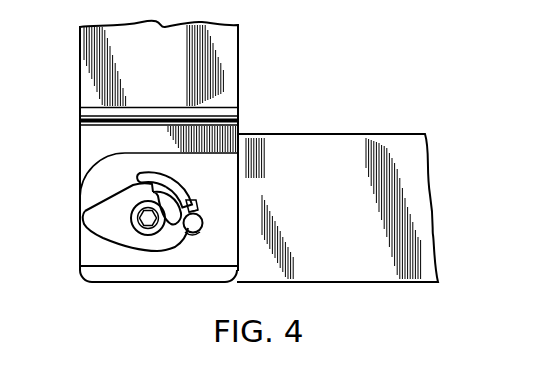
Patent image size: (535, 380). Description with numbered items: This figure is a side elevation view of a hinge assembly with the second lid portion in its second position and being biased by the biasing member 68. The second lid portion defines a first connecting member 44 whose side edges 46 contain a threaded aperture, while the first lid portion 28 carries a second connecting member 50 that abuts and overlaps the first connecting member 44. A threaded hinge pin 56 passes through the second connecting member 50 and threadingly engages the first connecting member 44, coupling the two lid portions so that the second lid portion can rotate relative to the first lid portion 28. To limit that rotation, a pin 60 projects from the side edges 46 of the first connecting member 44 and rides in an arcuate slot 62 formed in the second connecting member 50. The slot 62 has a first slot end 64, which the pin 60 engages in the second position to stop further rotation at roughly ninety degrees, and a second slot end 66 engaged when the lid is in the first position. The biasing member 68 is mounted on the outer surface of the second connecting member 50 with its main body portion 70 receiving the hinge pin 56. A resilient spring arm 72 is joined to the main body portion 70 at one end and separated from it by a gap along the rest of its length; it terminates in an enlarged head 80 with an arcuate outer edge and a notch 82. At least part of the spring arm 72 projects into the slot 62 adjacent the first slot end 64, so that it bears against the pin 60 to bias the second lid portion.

The first lid portion 28 is at (343, 132).
The first connecting member 44 is at (82, 131).
The side edges 46 is at (87, 159).
The second connecting members 50 is at (212, 272).
The threaded hinge pin 56 is at (155, 234).
The pin 60 is at (202, 221).
The arcuate slot 62 is at (177, 181).
The first slot end 64 is at (195, 235).
The second slot end 66 is at (141, 174).
The biasing member 68 is at (99, 255).
The main body portion 70 is at (99, 204).
The resilient spring arm 72 is at (193, 204).
The enlarged head 80 is at (190, 199).
The notch 82 is at (198, 212).